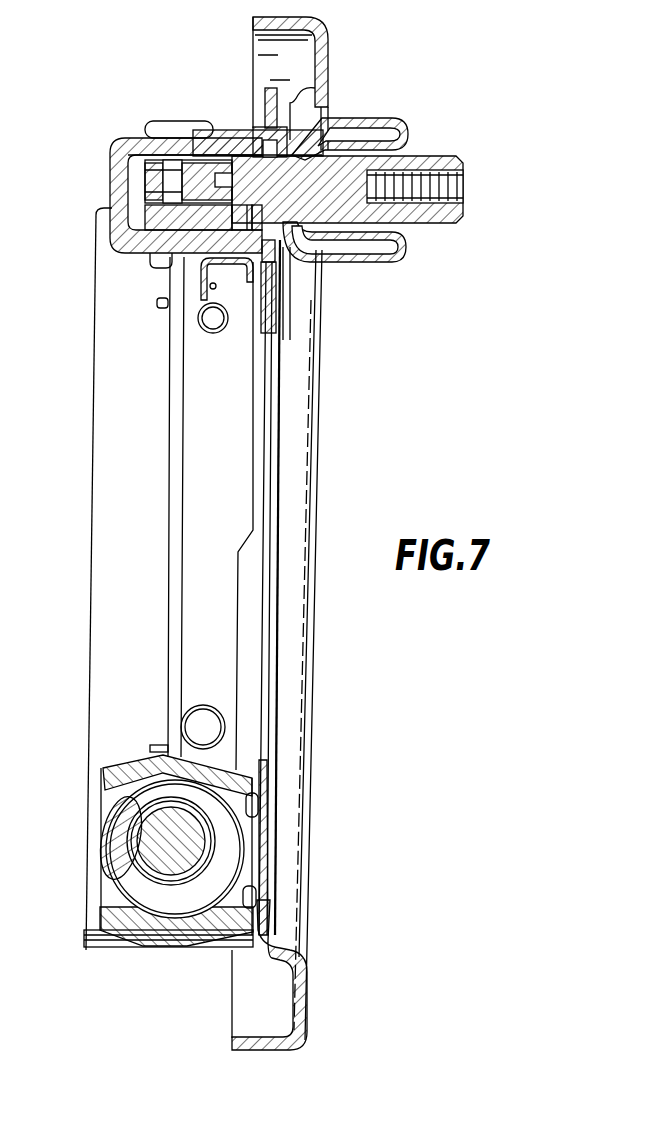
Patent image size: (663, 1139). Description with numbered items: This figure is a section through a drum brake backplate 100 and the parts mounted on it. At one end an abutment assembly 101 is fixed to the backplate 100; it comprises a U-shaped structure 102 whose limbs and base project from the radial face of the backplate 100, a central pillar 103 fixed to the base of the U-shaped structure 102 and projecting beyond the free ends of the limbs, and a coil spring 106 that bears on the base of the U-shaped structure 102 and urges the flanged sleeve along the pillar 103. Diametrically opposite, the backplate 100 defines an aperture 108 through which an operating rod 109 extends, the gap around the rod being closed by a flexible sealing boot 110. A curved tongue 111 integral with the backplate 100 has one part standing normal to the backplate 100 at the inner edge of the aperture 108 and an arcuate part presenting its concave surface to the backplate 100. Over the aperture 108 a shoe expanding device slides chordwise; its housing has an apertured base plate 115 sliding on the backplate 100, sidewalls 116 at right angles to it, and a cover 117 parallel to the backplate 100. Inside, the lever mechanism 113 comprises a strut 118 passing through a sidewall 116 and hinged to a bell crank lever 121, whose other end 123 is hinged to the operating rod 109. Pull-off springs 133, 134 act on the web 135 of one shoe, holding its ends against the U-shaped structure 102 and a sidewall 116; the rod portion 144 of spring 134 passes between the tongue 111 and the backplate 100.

The backplate 100 is at (282, 455).
The abutment assembly 101 is at (142, 950).
The U-shaped structure 102 is at (187, 935).
The central pillar 103 is at (185, 857).
The coil spring 106 is at (120, 885).
The aperture 108 is at (276, 262).
The operating rod 109 is at (430, 163).
The sealing boot 110 is at (395, 124).
The curved tongue 111 is at (212, 285).
The lever mechanism 113 is at (305, 126).
The base plate 115 is at (265, 96).
The sidewalls 116 is at (176, 140).
The cover 117 is at (112, 170).
The strut 118 is at (130, 226).
The bell crank lever 121 is at (140, 186).
The other end of the bell crank lever 123 is at (152, 172).
The brake pull-off spring 133 is at (196, 708).
The brake pull-off spring 134 is at (215, 333).
The web 135 is at (177, 434).
The rod portion 144 is at (265, 285).